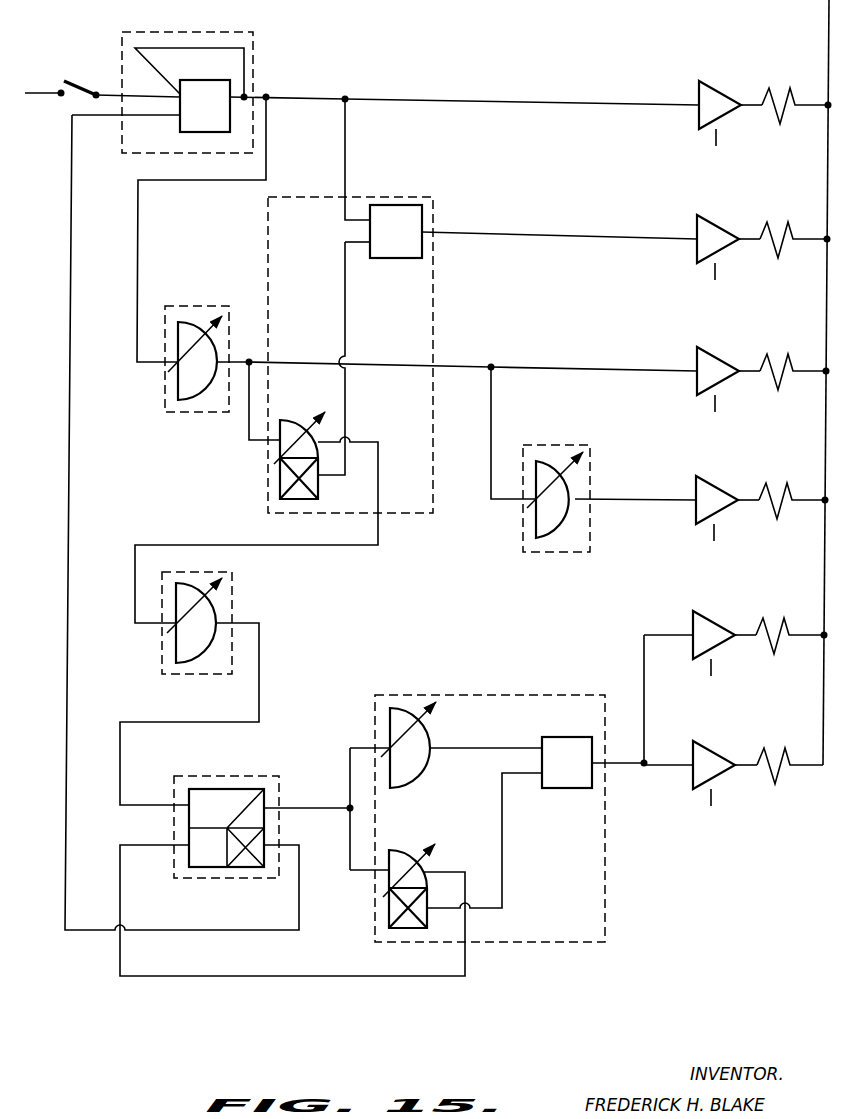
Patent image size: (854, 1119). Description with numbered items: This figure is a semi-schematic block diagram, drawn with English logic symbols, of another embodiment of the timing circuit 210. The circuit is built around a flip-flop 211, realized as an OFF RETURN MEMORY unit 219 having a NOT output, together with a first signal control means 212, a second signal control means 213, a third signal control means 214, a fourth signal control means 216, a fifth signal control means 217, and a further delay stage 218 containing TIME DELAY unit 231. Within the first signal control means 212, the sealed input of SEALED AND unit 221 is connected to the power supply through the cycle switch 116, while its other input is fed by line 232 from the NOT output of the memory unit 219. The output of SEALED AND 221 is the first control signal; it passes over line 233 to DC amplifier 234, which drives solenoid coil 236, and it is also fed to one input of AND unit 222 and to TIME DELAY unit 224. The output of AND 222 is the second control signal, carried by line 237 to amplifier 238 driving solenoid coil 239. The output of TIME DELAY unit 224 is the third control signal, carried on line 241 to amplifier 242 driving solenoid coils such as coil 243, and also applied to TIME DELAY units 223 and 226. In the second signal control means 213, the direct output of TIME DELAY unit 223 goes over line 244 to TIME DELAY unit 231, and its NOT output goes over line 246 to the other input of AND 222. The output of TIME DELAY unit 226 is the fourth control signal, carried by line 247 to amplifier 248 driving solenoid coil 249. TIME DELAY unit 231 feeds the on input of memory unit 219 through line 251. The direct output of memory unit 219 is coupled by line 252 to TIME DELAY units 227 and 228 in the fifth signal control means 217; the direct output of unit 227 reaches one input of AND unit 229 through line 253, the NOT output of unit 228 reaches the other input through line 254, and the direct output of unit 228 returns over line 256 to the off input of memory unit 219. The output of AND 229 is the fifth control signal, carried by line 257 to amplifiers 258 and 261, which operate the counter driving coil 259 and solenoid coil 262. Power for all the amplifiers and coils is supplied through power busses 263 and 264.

The cycle switch 116 is at (91, 57).
The control circuit 210 is at (551, 60).
The flip-flop 211 is at (232, 773).
The first signal control means 212 is at (234, 32).
The second signal control means 213 is at (435, 313).
The third signal control means 214 is at (185, 305).
The fourth signal control means 216 is at (567, 443).
The fifth signal control means 217 is at (503, 697).
The amplifier stage 218 is at (232, 578).
The OFF RETURN MEMORY unit 219 is at (197, 858).
The SEALED AND unit 221 is at (226, 86).
The AND unit 222 is at (412, 222).
The TIME DELAY unit 223 is at (291, 424).
The TIME DELAY unit 224 is at (182, 385).
The TIME DELAY unit 226 is at (537, 525).
The TIME DELAY unit 227 is at (430, 735).
The TIME DELAY unit 228 is at (408, 848).
The AND unit 229 is at (558, 783).
The TIME DELAY unit 231 is at (178, 648).
The line 232 is at (68, 466).
The line 233 is at (462, 99).
The DC amplifier 234 is at (712, 89).
The solenoid coil 236 is at (769, 88).
The line 237 is at (573, 234).
The amplifier 238 is at (710, 223).
The solenoid coil 239 is at (767, 222).
The line 241 is at (573, 366).
The amplifier 242 is at (707, 356).
The solenoid coil 243 is at (767, 354).
The line 244 is at (368, 442).
The line 246 is at (345, 347).
The line 247 is at (622, 500).
The amplifier 248 is at (709, 486).
The solenoid coil 249 is at (766, 483).
The line 251 is at (260, 667).
The line 252 is at (313, 808).
The line 253 is at (492, 748).
The line 254 is at (503, 853).
The line 256 is at (335, 978).
The line 257 is at (632, 767).
The amplifier 258 is at (710, 618).
The driving coil 259 is at (763, 618).
The amplifier 261 is at (708, 750).
The solenoid coil 262 is at (764, 748).
The power buss 263 is at (716, 146).
The power buss 264 is at (829, 22).